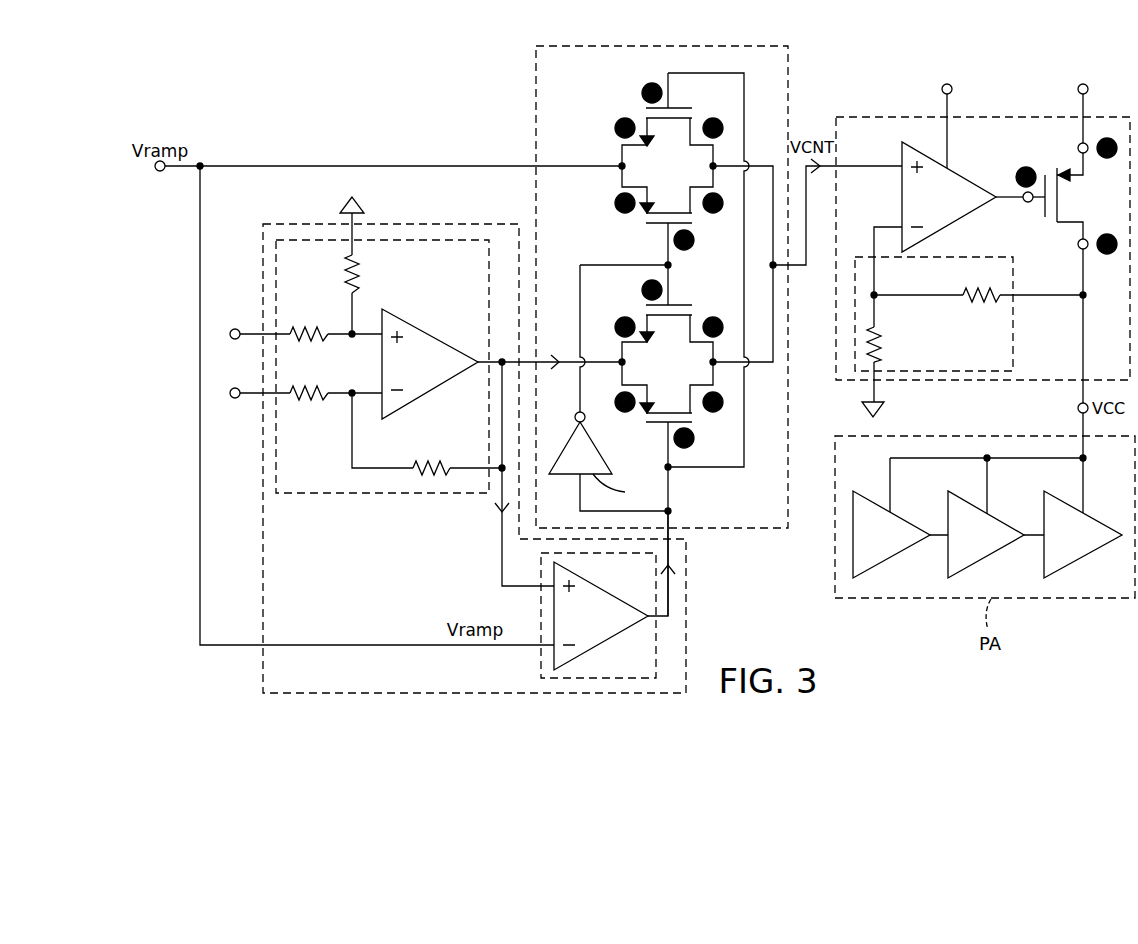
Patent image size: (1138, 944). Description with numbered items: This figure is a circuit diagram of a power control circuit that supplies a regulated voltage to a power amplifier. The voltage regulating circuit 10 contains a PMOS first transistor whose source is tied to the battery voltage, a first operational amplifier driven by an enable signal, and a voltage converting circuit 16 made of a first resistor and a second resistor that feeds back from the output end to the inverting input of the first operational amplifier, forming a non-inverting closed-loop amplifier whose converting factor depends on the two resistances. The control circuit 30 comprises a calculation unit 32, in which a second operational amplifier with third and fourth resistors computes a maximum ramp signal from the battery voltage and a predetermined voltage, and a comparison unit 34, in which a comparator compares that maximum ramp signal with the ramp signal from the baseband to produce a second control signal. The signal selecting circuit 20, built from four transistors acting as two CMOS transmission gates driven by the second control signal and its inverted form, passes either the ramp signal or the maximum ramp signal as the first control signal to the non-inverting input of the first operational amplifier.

The voltage regulating circuit 10 is at (870, 117).
The voltage converting circuit 16 is at (1013, 340).
The signal selecting circuit 20 is at (536, 106).
The control circuit 30 is at (686, 600).
The calculation unit 32 is at (370, 494).
The comparison unit 34 is at (541, 658).